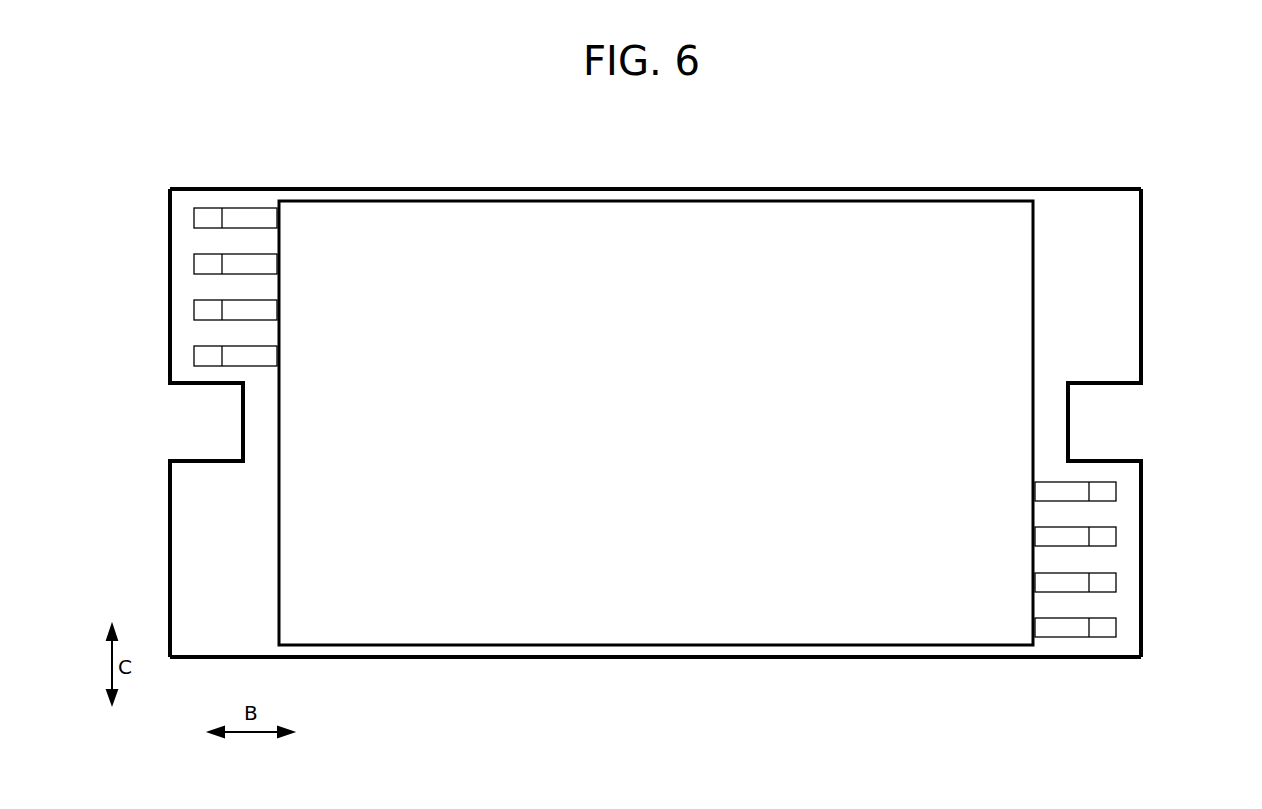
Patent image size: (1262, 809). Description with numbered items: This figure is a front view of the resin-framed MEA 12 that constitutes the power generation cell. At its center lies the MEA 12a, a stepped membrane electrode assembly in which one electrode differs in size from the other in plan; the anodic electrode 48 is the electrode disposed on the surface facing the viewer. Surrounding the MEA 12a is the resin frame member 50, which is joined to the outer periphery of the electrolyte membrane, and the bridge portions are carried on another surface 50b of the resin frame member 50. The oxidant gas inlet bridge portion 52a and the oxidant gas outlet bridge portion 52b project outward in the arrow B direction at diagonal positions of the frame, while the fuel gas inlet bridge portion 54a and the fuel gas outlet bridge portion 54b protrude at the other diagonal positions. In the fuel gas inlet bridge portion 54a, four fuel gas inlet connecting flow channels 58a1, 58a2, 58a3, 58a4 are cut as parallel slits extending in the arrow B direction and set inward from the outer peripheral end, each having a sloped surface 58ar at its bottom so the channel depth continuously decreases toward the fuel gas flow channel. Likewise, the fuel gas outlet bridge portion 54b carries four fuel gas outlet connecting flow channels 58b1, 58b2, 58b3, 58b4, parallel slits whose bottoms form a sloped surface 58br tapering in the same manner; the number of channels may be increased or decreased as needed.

The resin-framed MEA 12 is at (394, 127).
The MEA 12a is at (848, 211).
The anodic electrode 48 is at (595, 622).
The resin frame member 50 is at (1090, 180).
The another surface of the resin frame member 50b is at (535, 650).
The oxidant gas inlet bridge portion 52a is at (1121, 300).
The oxidant gas outlet bridge portion 52b is at (189, 546).
The fuel gas inlet bridge portion 54a is at (189, 333).
The fuel gas outlet bridge portion 54b is at (1121, 512).
The fuel gas inlet connecting flow channel 58a1 is at (268, 355).
The fuel gas inlet connecting flow channel 58a2 is at (268, 309).
The fuel gas inlet connecting flow channel 58a3 is at (268, 264).
The fuel gas inlet connecting flow channel 58a4 is at (268, 218).
The sloped surface 58ar is at (206, 218).
The fuel gas outlet connecting flow channel 58b1 is at (1043, 627).
The fuel gas outlet connecting flow channel 58b2 is at (1043, 582).
The fuel gas outlet connecting flow channel 58b3 is at (1043, 536).
The fuel gas outlet connecting flow channel 58b4 is at (1043, 490).
The sloped surface 58br is at (1106, 628).